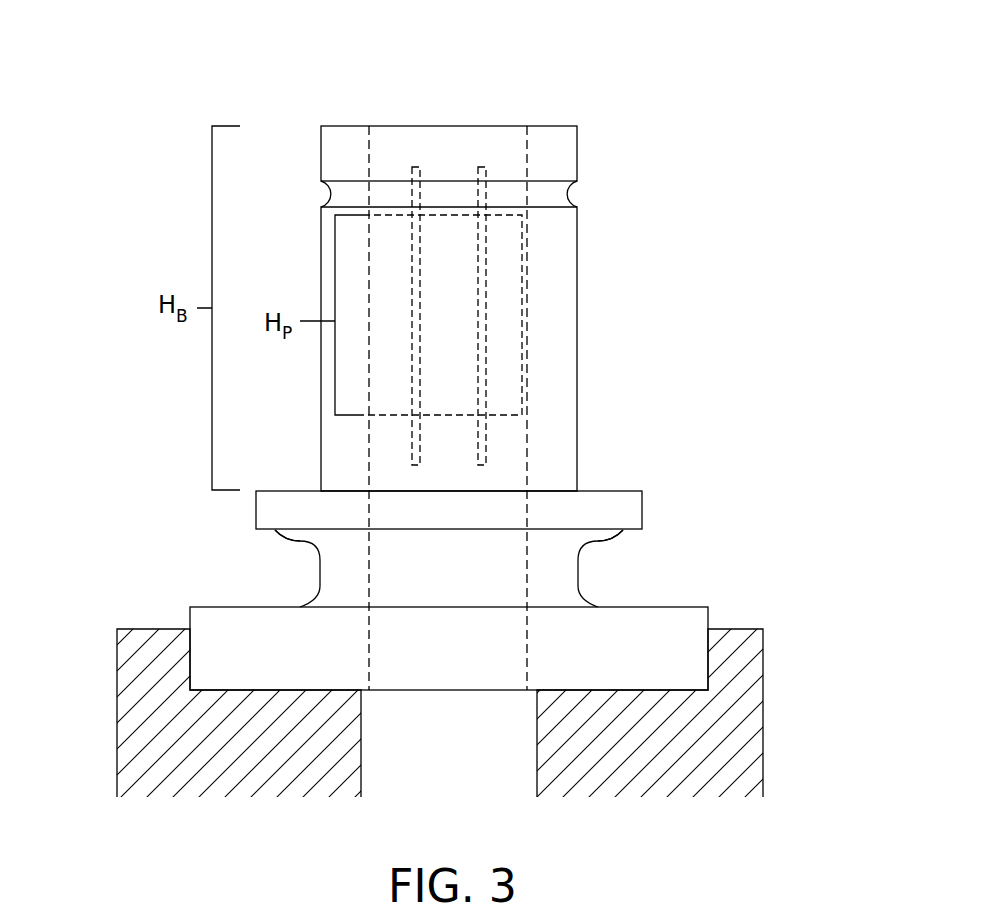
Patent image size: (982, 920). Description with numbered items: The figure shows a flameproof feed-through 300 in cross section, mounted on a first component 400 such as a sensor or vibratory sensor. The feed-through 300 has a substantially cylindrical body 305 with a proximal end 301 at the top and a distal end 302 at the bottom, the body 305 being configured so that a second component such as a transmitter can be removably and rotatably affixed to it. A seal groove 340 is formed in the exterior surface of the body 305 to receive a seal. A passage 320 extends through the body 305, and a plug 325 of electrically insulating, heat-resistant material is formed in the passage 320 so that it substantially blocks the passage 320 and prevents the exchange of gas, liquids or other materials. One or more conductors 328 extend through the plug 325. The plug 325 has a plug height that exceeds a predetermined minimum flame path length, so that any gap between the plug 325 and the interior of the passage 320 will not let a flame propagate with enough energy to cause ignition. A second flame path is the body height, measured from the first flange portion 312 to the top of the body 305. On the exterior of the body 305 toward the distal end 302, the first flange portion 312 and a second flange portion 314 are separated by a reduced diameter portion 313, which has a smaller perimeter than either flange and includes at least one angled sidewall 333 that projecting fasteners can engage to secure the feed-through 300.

The feed-through 300 is at (314, 112).
The proximal end 301 is at (147, 126).
The distal end 302 is at (92, 432).
The body 305 is at (586, 309).
The first flange portion 312 is at (733, 489).
The reduced diameter portion 313 is at (733, 535).
The second flange portion 314 is at (778, 608).
The passage 320 is at (448, 140).
The plug 325 is at (505, 246).
The conductors 328 is at (414, 464).
The angled sidewall 333 is at (294, 538).
The seal groove 340 is at (569, 196).
The first component 400 is at (763, 762).